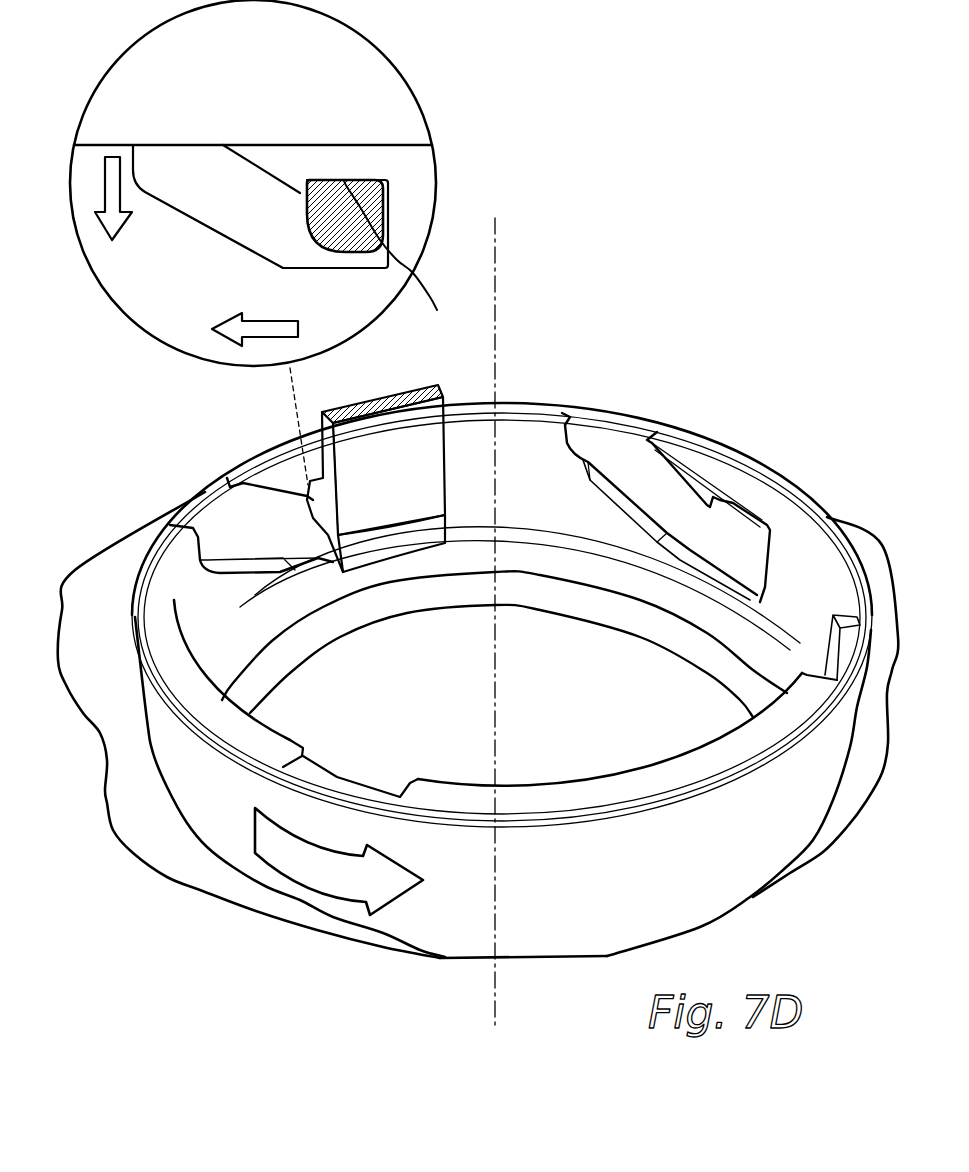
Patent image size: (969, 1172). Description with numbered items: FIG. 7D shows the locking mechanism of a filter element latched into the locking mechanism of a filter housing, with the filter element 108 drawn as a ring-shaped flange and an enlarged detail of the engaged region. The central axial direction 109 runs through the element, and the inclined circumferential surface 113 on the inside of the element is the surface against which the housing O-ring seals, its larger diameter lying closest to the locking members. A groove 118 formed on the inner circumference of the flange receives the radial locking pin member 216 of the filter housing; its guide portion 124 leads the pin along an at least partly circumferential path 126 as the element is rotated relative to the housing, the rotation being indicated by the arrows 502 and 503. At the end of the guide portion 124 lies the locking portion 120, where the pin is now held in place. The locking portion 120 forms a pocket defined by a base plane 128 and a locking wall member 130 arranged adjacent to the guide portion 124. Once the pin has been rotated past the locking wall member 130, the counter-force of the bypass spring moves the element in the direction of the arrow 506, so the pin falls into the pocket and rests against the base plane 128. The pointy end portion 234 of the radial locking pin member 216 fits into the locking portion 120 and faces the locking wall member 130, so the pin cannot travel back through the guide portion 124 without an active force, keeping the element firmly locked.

The cap assembly 108 is at (746, 365).
The axial direction 109 is at (496, 308).
The circumferential surface 113 is at (383, 605).
The groove 118 is at (193, 280).
The locking portion 120 is at (353, 168).
The guide portion 124 is at (198, 208).
The circumferential path 126 is at (400, 203).
The base plane 128 is at (399, 263).
The locking wall member 130 is at (300, 197).
The radial locking pin member 216 is at (384, 180).
The pointy end portion 234 is at (308, 180).
The arrow 502 is at (303, 878).
The arrow 503 is at (267, 332).
The arrow 506 is at (112, 168).